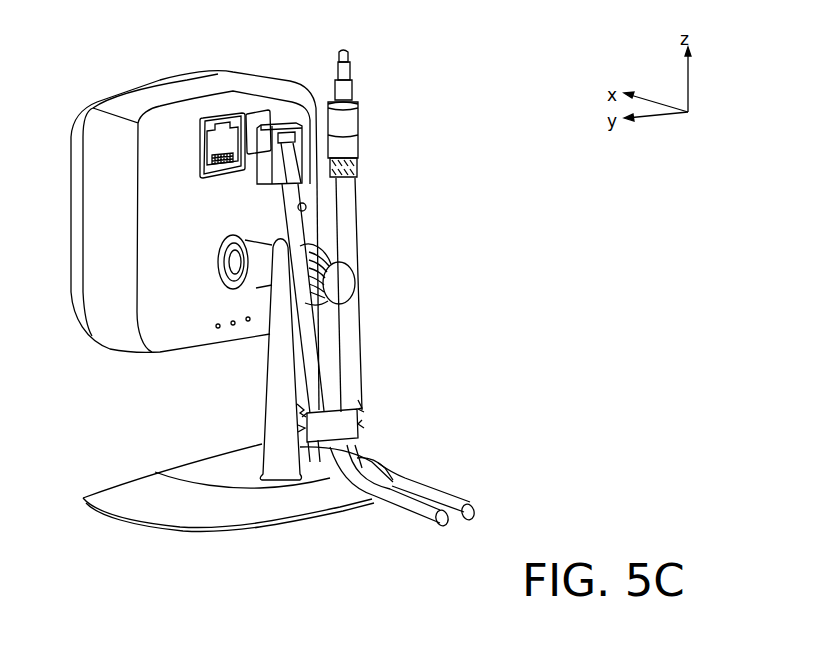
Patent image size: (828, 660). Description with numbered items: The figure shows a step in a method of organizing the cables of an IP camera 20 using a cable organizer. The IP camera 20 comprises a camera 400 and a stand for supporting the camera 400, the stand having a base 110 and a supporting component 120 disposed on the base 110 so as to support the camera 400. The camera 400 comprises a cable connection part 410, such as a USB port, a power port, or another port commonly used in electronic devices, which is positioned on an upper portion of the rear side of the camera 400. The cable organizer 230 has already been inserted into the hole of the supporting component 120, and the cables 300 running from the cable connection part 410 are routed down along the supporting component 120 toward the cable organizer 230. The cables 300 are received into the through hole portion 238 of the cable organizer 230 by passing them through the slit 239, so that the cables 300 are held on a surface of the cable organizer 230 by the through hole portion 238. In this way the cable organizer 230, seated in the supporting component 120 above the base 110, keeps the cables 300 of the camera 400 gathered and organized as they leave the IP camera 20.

The IP camera 20 is at (129, 63).
The camera 400 is at (292, 105).
The cable connection part 410 is at (259, 111).
The supporting component 120 is at (282, 368).
The base 110 is at (139, 498).
The cable organizer 230 is at (352, 432).
The through hole portion 238 is at (300, 412).
The slit 239 is at (298, 428).
The cables 300 is at (470, 506).